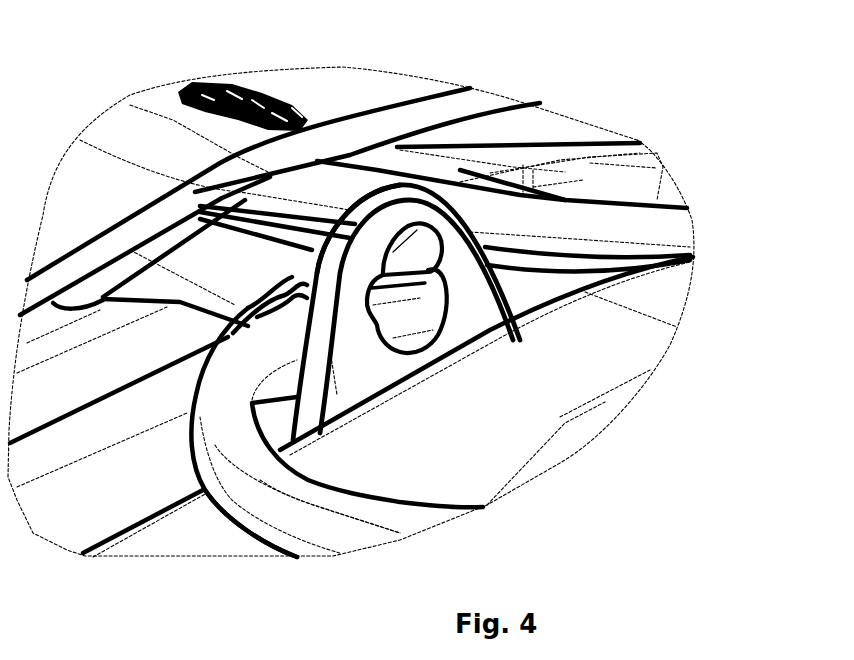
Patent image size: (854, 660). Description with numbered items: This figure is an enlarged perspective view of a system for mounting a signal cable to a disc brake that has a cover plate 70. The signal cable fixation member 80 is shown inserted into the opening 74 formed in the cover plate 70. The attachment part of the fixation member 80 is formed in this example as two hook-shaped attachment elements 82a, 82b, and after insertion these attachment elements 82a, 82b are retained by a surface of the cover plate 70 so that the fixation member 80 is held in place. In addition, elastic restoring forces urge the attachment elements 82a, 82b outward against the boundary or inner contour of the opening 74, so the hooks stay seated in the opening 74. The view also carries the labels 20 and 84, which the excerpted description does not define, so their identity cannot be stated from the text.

The vehicle seat 20 is at (297, 510).
The cover plate 70 is at (367, 367).
The opening 74 is at (352, 258).
The signal cable fixation member 80 is at (248, 272).
The hook-shaped attachment element 82a is at (420, 247).
The hook-shaped attachment element 82b is at (417, 313).
The hook 84 is at (245, 318).